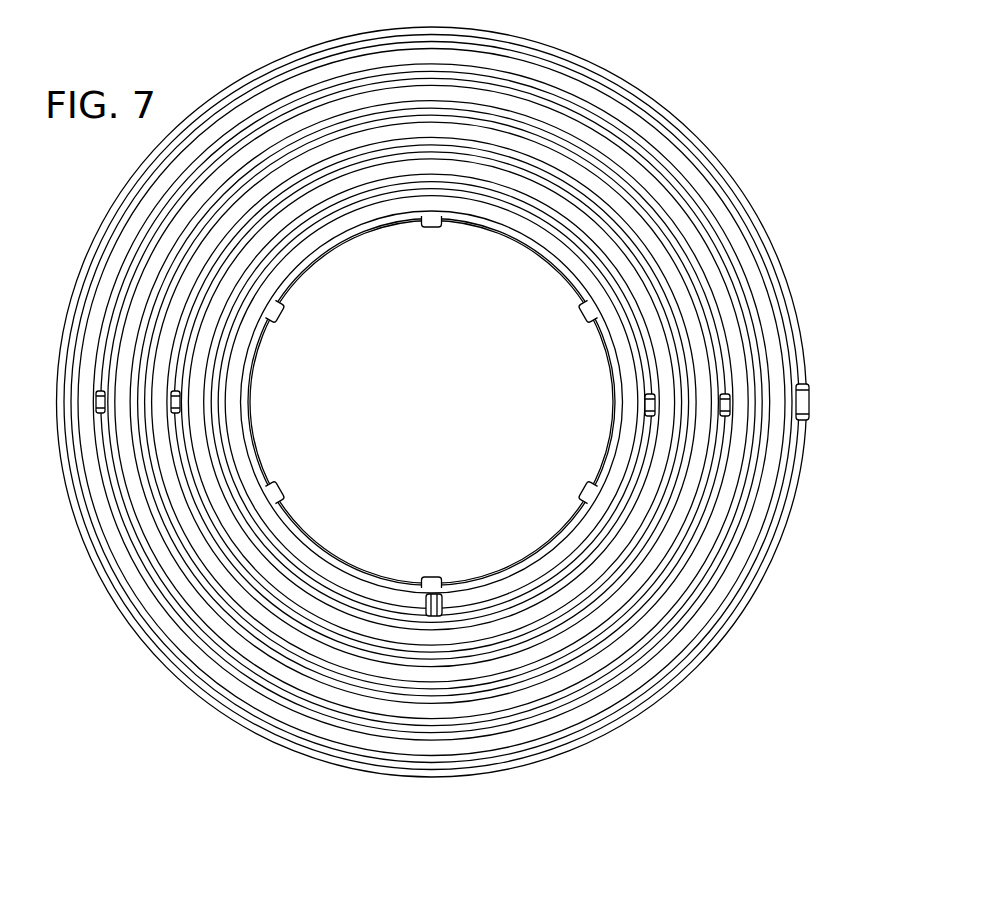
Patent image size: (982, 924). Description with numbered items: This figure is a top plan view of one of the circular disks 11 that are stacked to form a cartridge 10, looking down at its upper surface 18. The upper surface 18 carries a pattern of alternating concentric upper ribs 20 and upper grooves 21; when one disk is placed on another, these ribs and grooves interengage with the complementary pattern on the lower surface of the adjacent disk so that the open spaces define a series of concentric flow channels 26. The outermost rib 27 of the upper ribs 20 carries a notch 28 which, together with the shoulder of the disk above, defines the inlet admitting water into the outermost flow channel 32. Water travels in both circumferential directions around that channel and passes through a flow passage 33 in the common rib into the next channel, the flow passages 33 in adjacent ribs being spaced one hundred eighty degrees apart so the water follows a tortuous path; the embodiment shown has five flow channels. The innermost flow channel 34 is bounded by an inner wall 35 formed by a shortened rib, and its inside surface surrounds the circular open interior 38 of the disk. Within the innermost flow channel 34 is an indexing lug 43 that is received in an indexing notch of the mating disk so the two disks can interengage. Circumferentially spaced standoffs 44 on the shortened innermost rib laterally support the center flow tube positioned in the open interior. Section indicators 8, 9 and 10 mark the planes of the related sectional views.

The disk 11 is at (386, 778).
The upper surface 18 is at (330, 74).
The upper ribs 20 is at (662, 166).
The flow channels 26 is at (725, 292).
The upper grooves 21 is at (735, 330).
The outermost rib 27 is at (770, 556).
The outermost flow channel 32 is at (668, 660).
The inner wall 35 is at (316, 262).
The circular open interior 38 is at (484, 236).
The standoffs 44 is at (288, 322).
The flow passage 33 is at (104, 398).
The notch 28 is at (806, 420).
The indexing lug 43 is at (442, 598).
The innermost flow channel 34 is at (636, 390).
The section line 8- 8 is at (36, 374).
The section line 9- 9 is at (614, 22).
The cartridge 10 is at (100, 604).